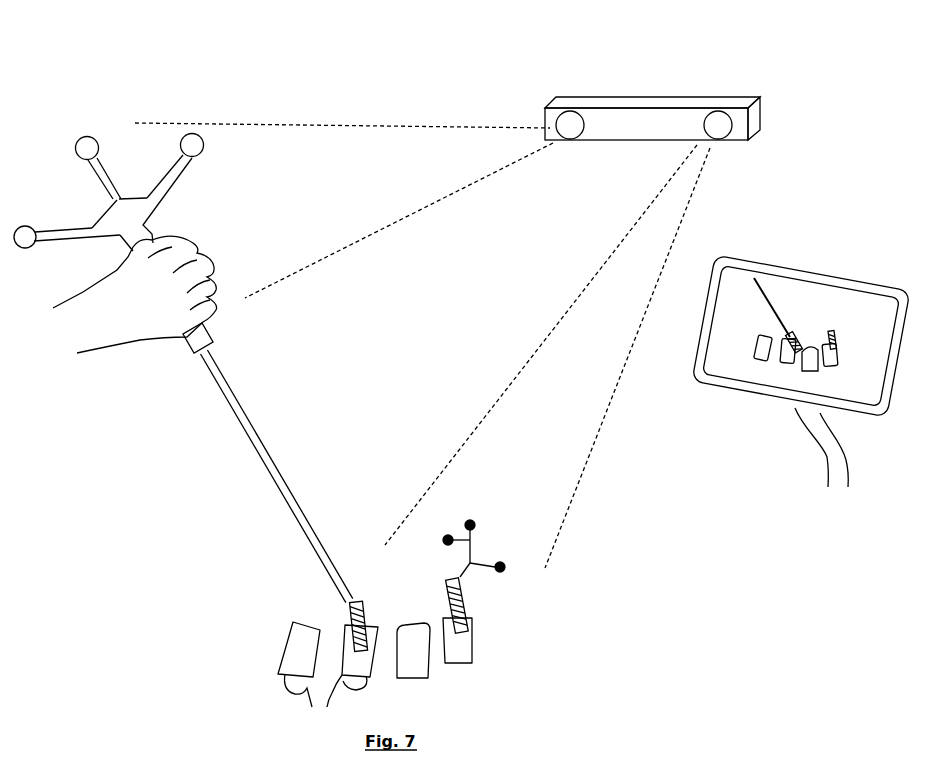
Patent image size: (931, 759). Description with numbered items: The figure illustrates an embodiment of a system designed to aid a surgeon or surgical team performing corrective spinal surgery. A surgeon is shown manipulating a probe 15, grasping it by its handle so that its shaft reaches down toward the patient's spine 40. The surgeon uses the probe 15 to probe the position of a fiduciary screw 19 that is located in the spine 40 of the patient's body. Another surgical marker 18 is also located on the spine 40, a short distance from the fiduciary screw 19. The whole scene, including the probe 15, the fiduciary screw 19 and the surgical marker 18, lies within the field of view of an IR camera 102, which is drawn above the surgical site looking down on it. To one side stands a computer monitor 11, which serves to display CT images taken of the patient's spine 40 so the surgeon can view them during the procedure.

The IR camera 102 is at (637, 98).
The computer monitor 11 is at (808, 262).
The probe 15 is at (230, 406).
The fiduciary screw 19 is at (349, 605).
The surgical marker 18 is at (475, 623).
The spine 40 is at (312, 707).